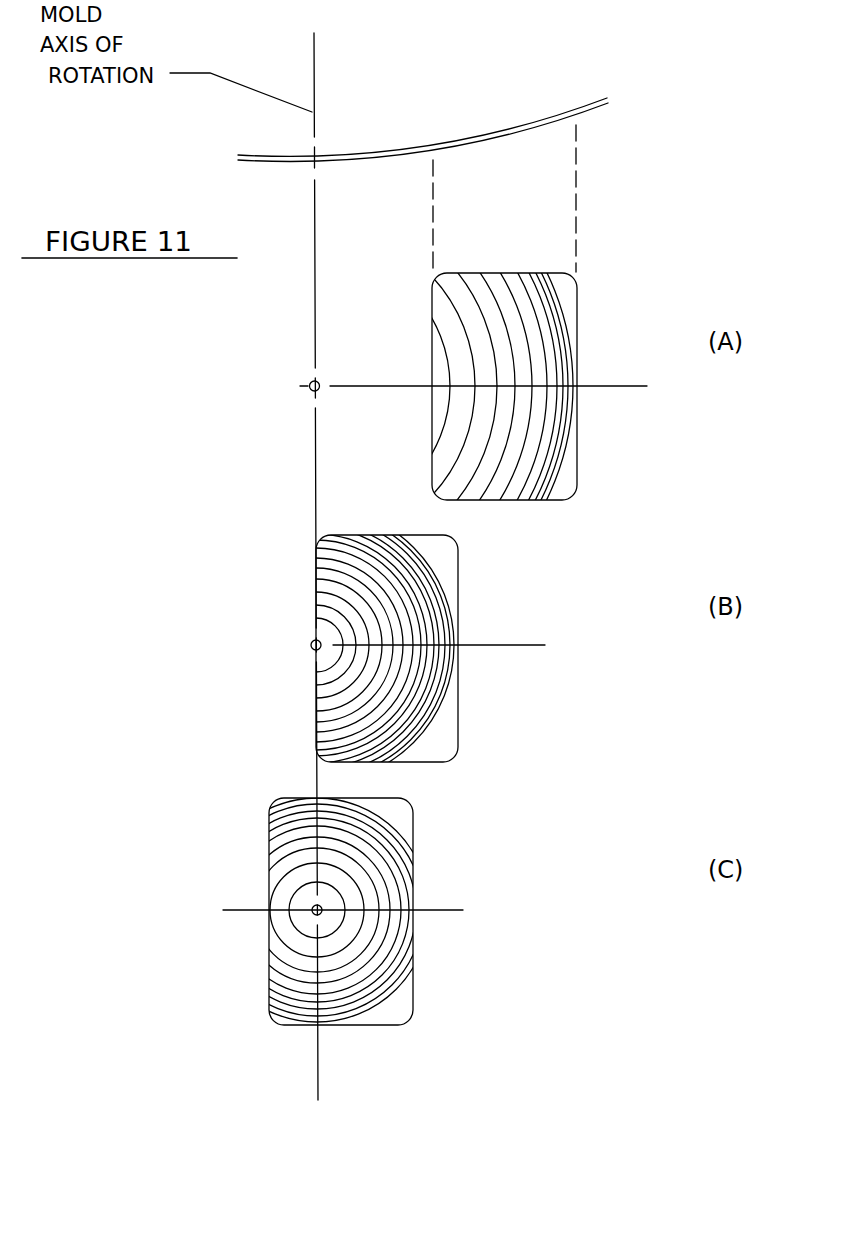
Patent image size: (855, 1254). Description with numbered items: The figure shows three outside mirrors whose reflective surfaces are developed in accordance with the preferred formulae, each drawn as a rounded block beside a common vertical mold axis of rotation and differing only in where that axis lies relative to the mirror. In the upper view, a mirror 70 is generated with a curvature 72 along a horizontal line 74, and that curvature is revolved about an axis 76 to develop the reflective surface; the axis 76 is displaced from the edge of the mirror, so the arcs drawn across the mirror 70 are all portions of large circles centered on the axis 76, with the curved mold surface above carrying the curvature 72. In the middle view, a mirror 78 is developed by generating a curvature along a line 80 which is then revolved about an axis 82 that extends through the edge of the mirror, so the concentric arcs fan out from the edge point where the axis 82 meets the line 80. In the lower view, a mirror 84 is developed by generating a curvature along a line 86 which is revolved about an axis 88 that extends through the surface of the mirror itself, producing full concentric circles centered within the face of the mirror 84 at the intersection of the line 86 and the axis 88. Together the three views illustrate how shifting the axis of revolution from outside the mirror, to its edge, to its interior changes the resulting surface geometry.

The mirror 70 is at (575, 277).
The curvature 72 is at (527, 140).
The line 74 is at (601, 387).
The axis 76 is at (310, 383).
The mirror 78 is at (455, 537).
The line 80 is at (509, 646).
The axis 82 is at (311, 643).
The mirror 84 is at (410, 800).
The line 86 is at (447, 911).
The axis 88 is at (312, 908).